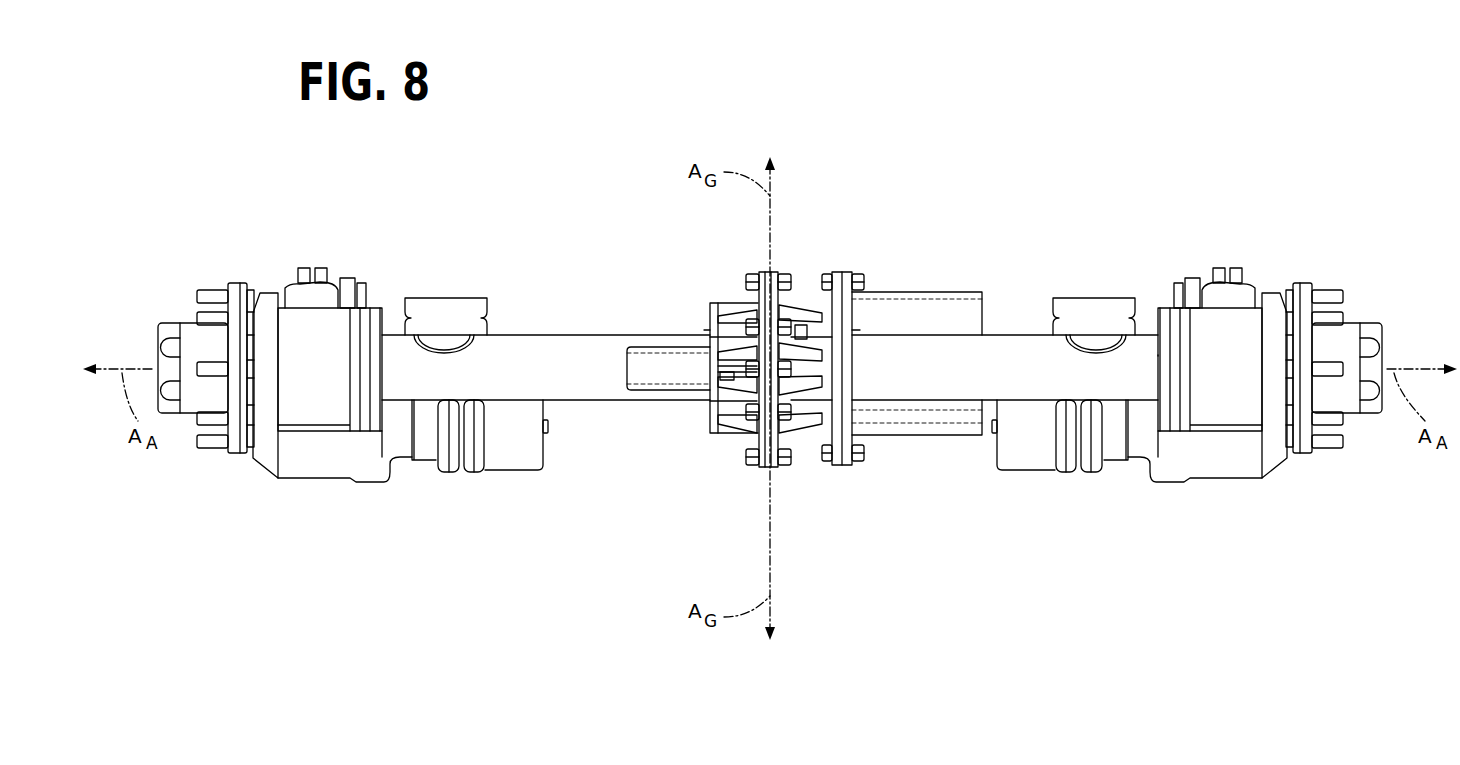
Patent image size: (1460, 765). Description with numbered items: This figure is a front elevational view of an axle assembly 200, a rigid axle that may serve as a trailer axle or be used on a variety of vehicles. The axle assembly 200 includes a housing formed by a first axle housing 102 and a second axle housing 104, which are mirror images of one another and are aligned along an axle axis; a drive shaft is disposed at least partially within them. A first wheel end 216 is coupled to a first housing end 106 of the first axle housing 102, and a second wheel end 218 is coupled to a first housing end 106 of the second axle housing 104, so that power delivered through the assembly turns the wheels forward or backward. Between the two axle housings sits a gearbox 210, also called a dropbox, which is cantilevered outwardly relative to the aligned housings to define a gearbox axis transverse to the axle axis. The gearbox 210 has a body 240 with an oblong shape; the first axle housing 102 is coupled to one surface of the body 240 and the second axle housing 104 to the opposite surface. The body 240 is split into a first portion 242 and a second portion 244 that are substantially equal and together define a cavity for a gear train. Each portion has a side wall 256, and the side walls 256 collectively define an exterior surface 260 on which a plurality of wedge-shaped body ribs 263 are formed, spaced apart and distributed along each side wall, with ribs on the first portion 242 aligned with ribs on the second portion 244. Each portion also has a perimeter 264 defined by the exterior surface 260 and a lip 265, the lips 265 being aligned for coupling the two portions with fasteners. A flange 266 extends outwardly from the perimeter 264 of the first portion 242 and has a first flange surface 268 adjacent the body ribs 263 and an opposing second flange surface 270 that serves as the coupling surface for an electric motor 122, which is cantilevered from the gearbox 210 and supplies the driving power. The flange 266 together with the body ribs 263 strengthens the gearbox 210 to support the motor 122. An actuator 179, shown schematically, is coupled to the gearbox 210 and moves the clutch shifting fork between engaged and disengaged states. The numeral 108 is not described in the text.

The axle assembly 200 is at (1019, 208).
The second wheel end 218 is at (260, 265).
The first wheel end 216 is at (1301, 245).
The first housing end 106 is at (373, 308).
The second axle housing 104 is at (560, 350).
The first axle housing 102 is at (1030, 350).
The actuator 179 is at (630, 372).
The electric motor 122 is at (935, 305).
The first flange surface 268 is at (856, 417).
The gearbox 210 is at (758, 486).
The body 240 is at (757, 448).
The first portion 242 is at (813, 440).
The second portion 244 is at (718, 398).
The side wall 256 is at (800, 328).
The exterior surface 260 is at (763, 352).
The body ribs 263 is at (707, 333).
The perimeter 264 is at (812, 400).
The beam end 108 is at (852, 332).
The lip 265 is at (767, 275).
The flange 266 is at (836, 468).
The second flange surface 270 is at (860, 444).